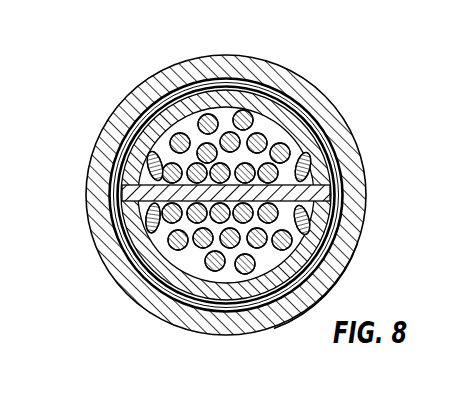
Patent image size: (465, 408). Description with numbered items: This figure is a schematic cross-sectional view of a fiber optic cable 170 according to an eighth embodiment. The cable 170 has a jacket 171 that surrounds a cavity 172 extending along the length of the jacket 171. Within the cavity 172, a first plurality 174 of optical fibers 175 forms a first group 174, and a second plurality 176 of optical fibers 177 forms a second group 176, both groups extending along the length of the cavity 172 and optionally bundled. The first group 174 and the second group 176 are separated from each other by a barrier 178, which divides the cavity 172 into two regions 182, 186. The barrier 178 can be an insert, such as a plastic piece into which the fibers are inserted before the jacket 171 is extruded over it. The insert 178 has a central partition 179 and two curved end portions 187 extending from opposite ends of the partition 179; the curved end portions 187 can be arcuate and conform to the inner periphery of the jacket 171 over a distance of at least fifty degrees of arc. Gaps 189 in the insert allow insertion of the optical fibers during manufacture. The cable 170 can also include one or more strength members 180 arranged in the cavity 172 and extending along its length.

The fiber optic cable 170 is at (352, 125).
The curved end portions 187 is at (209, 56).
The region 186 is at (164, 100).
The optical fibers 175 is at (138, 110).
The central partition 179 is at (262, 85).
The jacket 171 is at (100, 130).
The region 182 is at (186, 292).
The first group of optical fibers 174 is at (265, 130).
The optical fibers 177 is at (290, 284).
The second group of optical fibers 176 is at (340, 260).
The cavity 172 is at (150, 256).
The barrier 178 is at (135, 228).
The gaps 189 is at (124, 188).
The strength members 180 is at (148, 160).